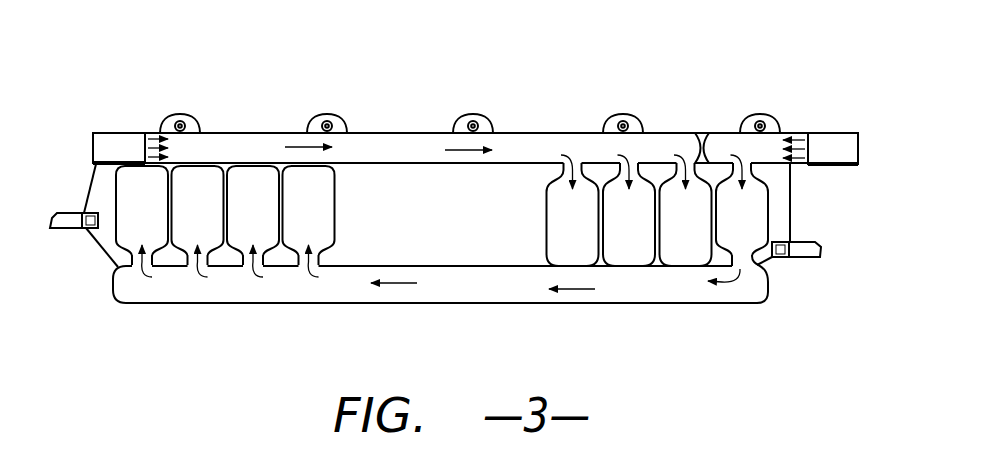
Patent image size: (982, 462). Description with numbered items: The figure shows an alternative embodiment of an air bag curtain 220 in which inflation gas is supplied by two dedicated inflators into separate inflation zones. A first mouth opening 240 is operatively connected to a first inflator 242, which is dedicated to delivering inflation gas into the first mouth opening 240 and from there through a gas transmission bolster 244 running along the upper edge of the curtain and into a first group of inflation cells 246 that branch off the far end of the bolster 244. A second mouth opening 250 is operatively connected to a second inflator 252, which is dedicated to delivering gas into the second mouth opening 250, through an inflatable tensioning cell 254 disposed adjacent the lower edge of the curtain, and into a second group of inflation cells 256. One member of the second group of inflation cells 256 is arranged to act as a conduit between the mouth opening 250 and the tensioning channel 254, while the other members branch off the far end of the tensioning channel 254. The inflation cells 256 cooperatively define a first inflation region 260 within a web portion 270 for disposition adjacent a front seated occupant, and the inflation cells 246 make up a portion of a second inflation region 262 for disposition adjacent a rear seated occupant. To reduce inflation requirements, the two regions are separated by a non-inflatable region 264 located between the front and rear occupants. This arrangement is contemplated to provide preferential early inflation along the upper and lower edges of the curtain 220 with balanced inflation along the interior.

The air bag curtain 220 is at (601, 79).
The first mouth opening 240 is at (153, 140).
The first inflator 242 is at (118, 140).
The gas transmission bolster 244 is at (425, 148).
The first group of inflation cells 246 is at (552, 232).
The second mouth opening 250 is at (795, 139).
The second inflator 252 is at (829, 143).
The inflatable tensioning cell 254 is at (665, 304).
The second group of inflation cells 256 is at (122, 215).
The first inflation region 260 is at (348, 198).
The second inflation region 262 is at (540, 202).
The non-inflatable region 264 is at (419, 231).
The web portion 270 is at (90, 250).